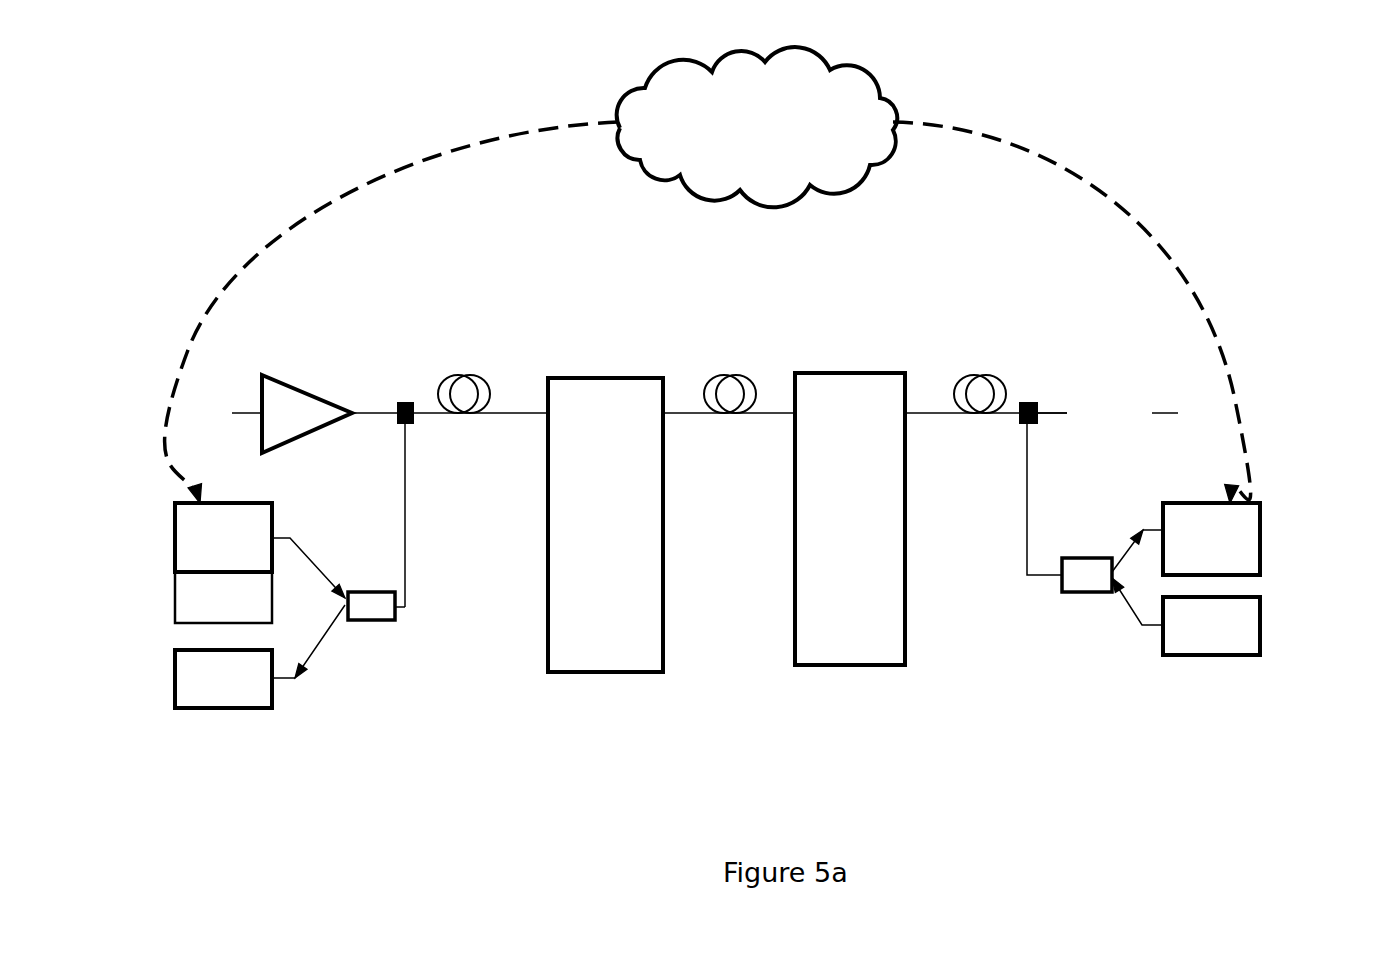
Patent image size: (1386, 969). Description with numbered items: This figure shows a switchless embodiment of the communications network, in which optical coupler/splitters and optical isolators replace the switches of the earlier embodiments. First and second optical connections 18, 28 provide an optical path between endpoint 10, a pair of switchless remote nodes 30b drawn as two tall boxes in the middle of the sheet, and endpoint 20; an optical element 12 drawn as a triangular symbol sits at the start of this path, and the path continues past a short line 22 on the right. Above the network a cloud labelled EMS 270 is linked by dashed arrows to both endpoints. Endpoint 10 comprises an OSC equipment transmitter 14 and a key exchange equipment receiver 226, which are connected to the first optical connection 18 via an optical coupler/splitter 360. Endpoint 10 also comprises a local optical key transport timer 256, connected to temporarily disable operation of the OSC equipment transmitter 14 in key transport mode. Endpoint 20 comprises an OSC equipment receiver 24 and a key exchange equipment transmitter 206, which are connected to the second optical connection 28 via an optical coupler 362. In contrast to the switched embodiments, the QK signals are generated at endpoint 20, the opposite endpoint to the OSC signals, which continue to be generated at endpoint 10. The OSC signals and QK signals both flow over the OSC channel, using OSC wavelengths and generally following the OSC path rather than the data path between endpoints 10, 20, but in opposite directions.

The element management system (EMS) 270 is at (708, 275).
The optical amplifier 12 is at (307, 414).
The first optical connection 18 is at (465, 411).
The switchless remote node 30b is at (726, 522).
The second optical connection 28 is at (976, 414).
The optical fiber 22 is at (1072, 415).
The OSC equipment transmitter 14 is at (202, 537).
The local optical key transport timer 256 is at (194, 597).
The key exchange equipment receiver 226 is at (194, 679).
The optical coupler/splitter 360 is at (356, 540).
The OSC equipment receiver 24 is at (1234, 539).
The key exchange equipment transmitter 206 is at (1242, 626).
The optical coupler 362 is at (1091, 514).
The endpoint 10 is at (190, 772).
The endpoint 20 is at (1225, 714).